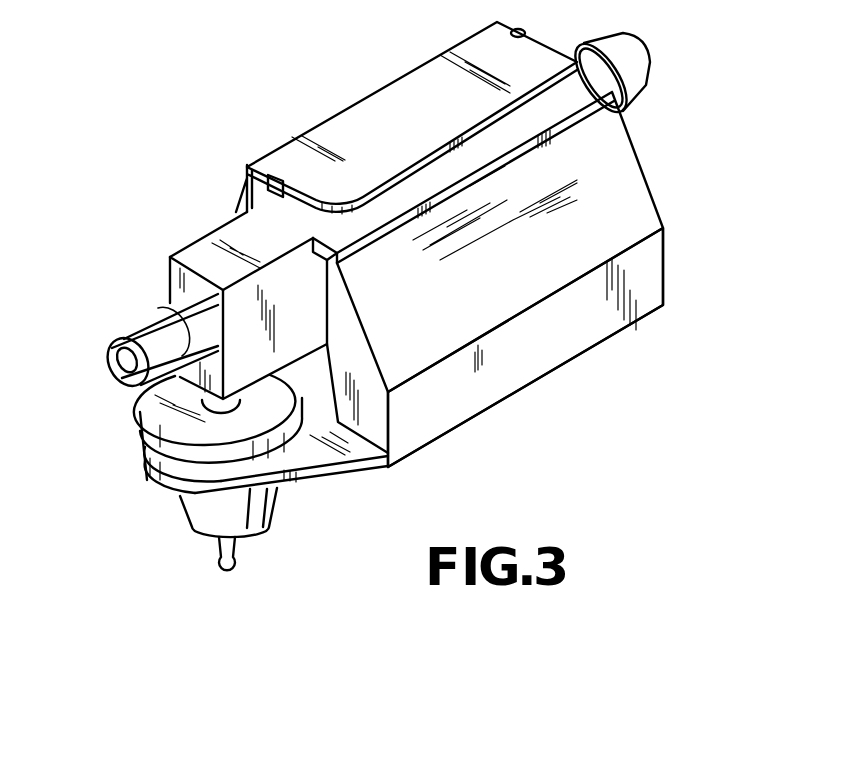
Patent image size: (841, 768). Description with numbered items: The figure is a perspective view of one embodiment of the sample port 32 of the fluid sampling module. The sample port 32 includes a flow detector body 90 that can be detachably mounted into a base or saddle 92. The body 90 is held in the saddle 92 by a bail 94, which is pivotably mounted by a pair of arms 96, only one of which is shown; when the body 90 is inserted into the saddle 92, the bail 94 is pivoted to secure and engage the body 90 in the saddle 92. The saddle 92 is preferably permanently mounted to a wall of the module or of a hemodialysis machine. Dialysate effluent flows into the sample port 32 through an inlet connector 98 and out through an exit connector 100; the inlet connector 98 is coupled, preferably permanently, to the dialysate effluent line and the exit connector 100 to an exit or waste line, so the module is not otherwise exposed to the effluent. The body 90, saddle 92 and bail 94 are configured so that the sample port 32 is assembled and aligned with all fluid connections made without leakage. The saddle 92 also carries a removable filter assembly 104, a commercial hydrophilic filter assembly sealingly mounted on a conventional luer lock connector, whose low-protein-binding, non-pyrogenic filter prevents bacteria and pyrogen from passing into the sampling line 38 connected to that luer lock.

The sample port 32 is at (685, 221).
The sampling line 38 is at (238, 548).
The flow detector body 90 is at (197, 233).
The saddle 92 is at (537, 358).
The bail 94 is at (394, 144).
The arms 96 is at (250, 186).
The inlet connector 98 is at (137, 320).
The exit connector 100 is at (650, 83).
The filter assembly 104 is at (150, 412).